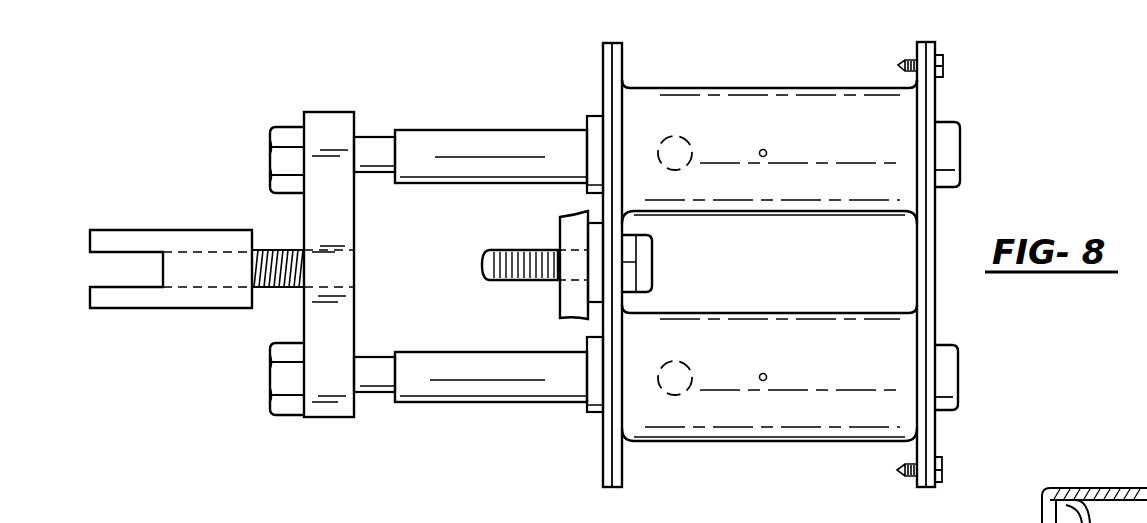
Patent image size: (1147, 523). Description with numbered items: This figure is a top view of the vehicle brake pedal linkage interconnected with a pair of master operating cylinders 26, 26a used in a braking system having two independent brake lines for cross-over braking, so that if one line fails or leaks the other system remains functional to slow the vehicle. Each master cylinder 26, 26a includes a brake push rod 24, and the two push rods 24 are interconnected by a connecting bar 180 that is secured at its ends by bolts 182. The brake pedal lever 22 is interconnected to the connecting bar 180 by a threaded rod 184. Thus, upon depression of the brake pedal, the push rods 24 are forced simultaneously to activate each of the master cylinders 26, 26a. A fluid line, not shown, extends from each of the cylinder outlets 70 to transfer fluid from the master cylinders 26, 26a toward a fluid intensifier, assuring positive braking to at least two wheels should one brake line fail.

The brake pedal lever 22 is at (197, 232).
The brake push rod 24 is at (492, 137).
The master operating cylinder 26 is at (792, 95).
The master operating cylinder 26a is at (762, 441).
The cylinder outlet 70 is at (960, 150).
The connecting bar 180 is at (338, 112).
The bolt 182 is at (272, 158).
The threaded rod 184 is at (284, 287).